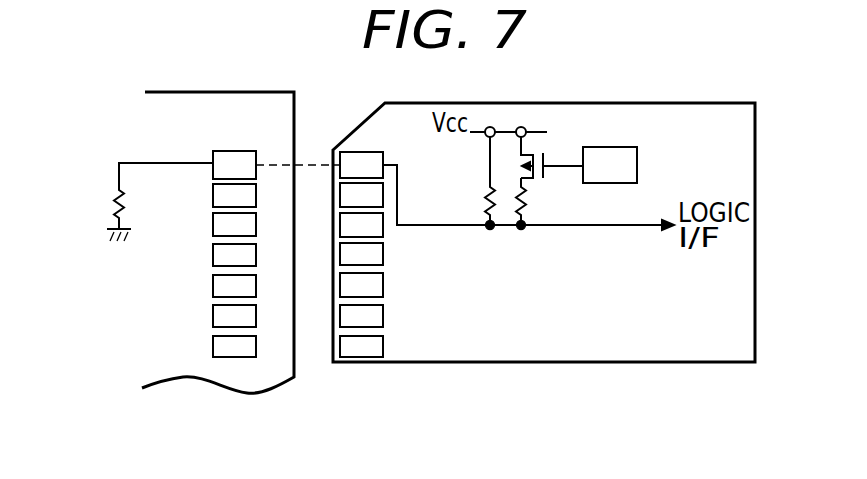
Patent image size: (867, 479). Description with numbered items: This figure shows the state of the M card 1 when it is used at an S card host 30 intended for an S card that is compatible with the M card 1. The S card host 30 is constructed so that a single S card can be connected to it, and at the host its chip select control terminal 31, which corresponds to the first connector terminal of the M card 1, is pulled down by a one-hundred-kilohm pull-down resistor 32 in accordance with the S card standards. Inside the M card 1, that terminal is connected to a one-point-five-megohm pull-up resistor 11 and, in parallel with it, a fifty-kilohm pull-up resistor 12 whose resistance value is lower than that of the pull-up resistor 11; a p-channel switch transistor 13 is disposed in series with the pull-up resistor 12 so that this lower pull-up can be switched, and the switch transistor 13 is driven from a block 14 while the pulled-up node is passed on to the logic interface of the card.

The M card 1 is at (550, 363).
The pull-up resistor 11 is at (489, 203).
The pull-up resistor 12 is at (523, 229).
The p-channel switch transistor 13 is at (545, 160).
The control circuit 14 is at (637, 160).
The S card host 30 is at (296, 133).
The chip select control terminal 31 is at (210, 157).
The pull-down resistor 32 is at (115, 195).